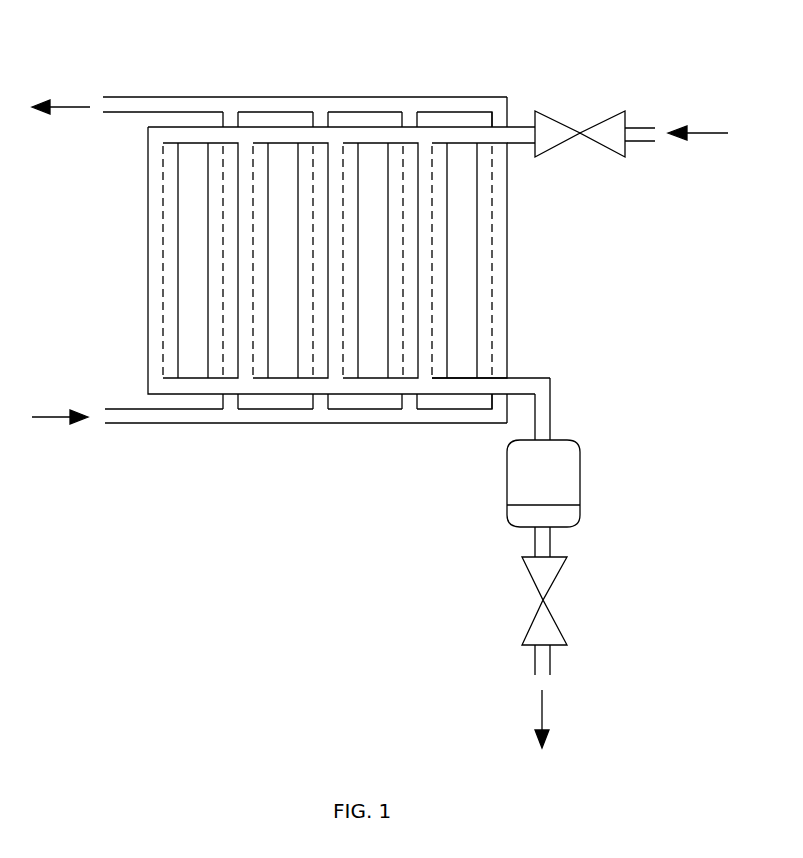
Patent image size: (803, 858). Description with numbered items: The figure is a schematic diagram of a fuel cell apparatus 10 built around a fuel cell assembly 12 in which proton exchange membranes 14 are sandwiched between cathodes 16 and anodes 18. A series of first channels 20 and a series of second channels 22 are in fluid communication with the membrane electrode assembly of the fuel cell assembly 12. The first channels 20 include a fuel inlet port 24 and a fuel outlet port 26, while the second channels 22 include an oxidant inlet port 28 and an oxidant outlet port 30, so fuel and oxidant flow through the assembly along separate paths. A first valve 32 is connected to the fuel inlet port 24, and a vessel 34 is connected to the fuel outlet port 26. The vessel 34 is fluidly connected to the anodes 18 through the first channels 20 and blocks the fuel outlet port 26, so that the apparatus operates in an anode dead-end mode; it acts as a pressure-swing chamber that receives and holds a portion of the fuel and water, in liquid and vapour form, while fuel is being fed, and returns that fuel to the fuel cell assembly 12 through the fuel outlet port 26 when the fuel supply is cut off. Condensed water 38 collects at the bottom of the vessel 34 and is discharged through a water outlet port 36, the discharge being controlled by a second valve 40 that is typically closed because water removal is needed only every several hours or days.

The fuel cell apparatus 10 is at (233, 587).
The fuel cell assembly 12 is at (308, 81).
The proton exchange membranes 14 is at (458, 186).
The cathodes 16 is at (305, 331).
The anodes 18 is at (350, 322).
The first channels 20 is at (246, 134).
The second channels 22 is at (322, 415).
The fuel inlet port 24 is at (522, 136).
The fuel outlet port 26 is at (543, 413).
The oxidant inlet port 28 is at (174, 418).
The oxidant outlet port 30 is at (128, 106).
The first valve 32 is at (547, 140).
The vessel 34 is at (583, 490).
The water outlet port 36 is at (543, 545).
The water 38 is at (538, 515).
The second valve 40 is at (545, 635).